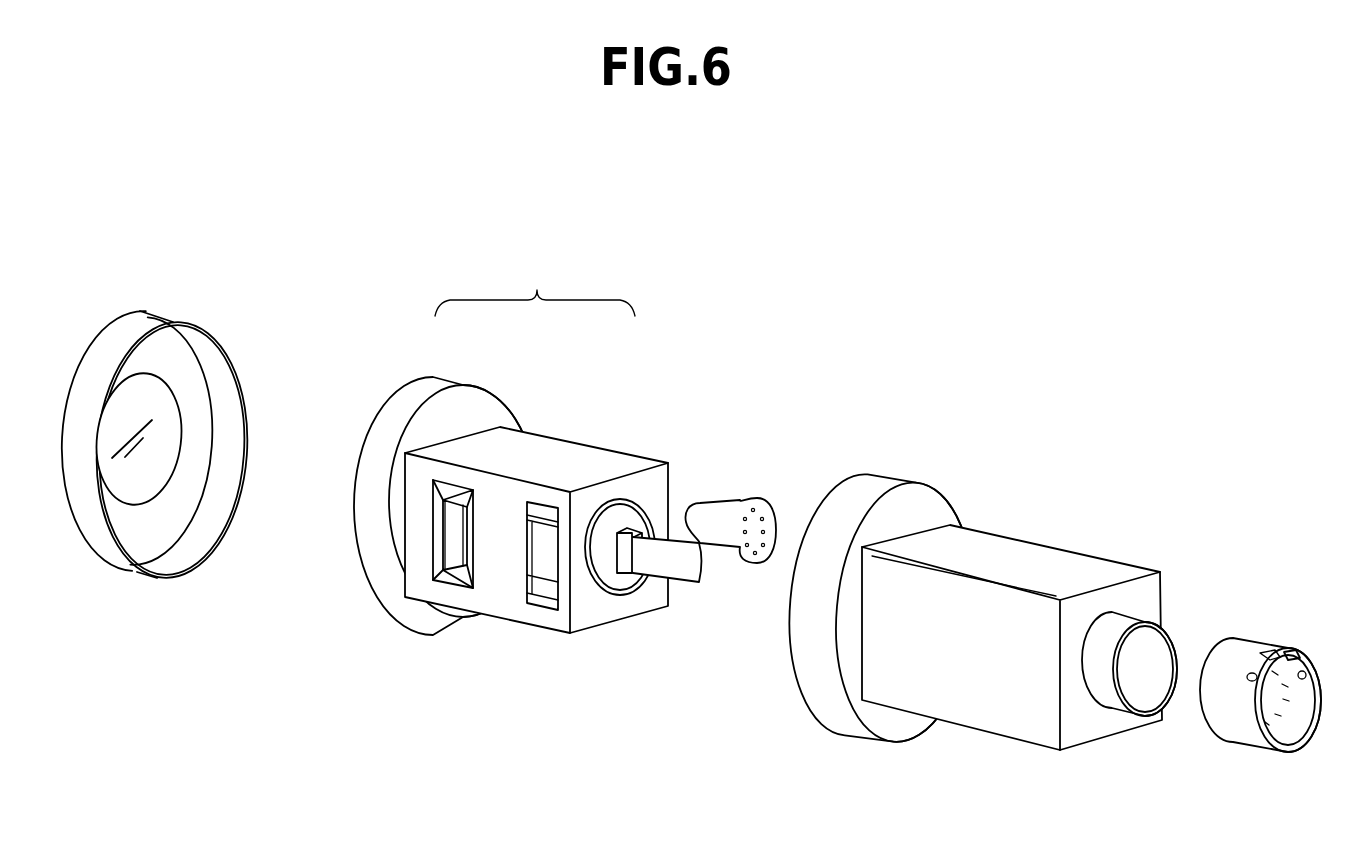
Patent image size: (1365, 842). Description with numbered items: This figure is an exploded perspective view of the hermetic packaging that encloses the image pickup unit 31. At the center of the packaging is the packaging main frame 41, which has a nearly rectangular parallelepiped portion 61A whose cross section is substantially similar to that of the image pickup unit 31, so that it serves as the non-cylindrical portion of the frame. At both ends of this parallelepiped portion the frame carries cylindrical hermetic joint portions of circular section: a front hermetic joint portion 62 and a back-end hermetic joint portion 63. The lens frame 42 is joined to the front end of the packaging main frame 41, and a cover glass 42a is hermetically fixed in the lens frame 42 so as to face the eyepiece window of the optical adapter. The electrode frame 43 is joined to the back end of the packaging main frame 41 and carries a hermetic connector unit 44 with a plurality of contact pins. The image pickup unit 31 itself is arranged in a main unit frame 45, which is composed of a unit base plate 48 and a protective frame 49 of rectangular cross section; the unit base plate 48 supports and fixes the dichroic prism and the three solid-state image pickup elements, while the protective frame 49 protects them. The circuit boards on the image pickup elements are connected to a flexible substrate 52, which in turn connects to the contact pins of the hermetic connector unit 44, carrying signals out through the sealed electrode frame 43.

The image pickup unit 31 is at (677, 283).
The packaging main frame 41 is at (1040, 411).
The lens frame 42 is at (168, 320).
The cover glass 42a is at (137, 502).
The electrode frame 43 is at (1247, 643).
The hermetic connector unit 44 is at (1291, 655).
The main unit frame 45 is at (535, 286).
The unit base plate 48 is at (443, 382).
The protective frame 49 is at (580, 443).
The flexible substrate 52 is at (722, 505).
The nearly rectangular parallelepiped portion 61A is at (1053, 547).
The front hermetic joint portion 62 is at (888, 478).
The back-end hermetic joint portion 63 is at (1147, 618).